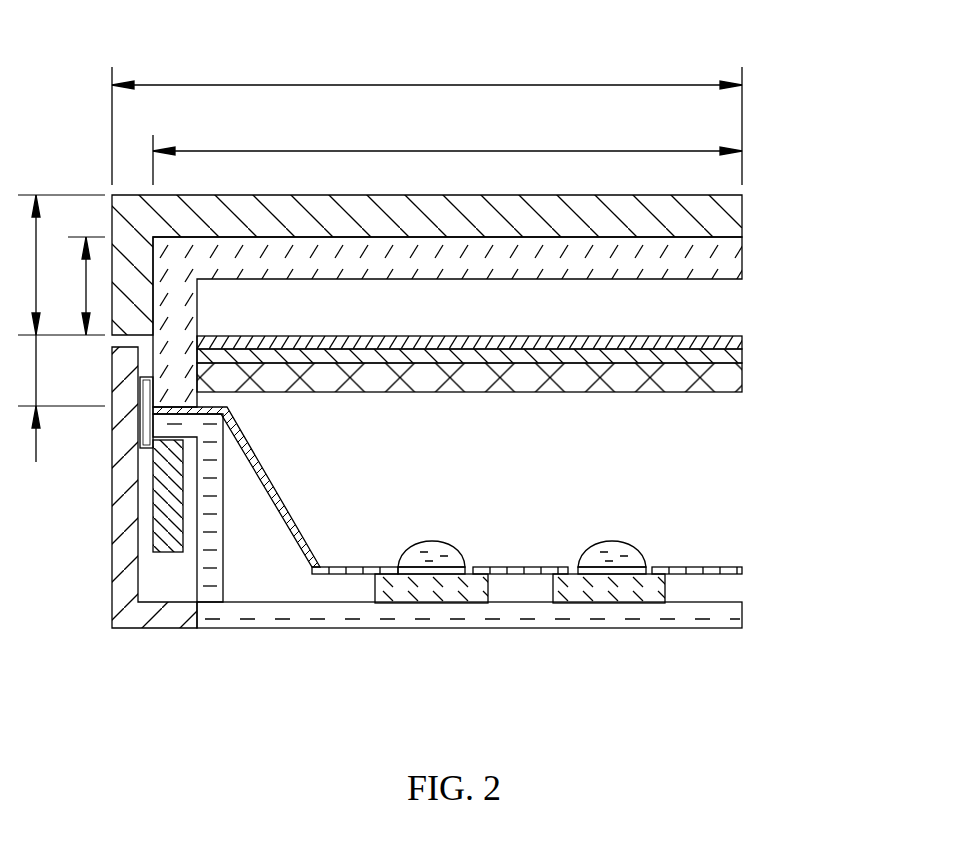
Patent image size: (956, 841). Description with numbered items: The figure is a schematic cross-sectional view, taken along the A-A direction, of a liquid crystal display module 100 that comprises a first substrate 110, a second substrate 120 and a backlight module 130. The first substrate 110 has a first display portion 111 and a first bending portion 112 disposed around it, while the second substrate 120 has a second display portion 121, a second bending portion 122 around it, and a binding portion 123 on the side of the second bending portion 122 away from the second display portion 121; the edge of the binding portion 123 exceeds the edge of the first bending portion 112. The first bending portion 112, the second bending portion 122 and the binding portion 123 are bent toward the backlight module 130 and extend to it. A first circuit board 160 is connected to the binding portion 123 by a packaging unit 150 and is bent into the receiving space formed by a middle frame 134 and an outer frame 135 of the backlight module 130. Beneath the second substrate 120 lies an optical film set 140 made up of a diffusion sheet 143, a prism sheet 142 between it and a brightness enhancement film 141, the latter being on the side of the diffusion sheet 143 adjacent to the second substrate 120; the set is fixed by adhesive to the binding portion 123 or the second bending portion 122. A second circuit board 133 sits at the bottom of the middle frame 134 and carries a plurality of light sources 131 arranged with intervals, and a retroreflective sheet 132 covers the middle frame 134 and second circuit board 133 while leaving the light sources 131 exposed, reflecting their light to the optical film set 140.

The liquid crystal display module 100 is at (376, 27).
The first substrate 110 is at (748, 208).
The first display portion 111 is at (427, 121).
The first bending portion 112 is at (52, 265).
The second substrate 120 is at (748, 270).
The second display portion 121 is at (447, 154).
The second bending portion 122 is at (79, 286).
The binding portion 123 is at (52, 398).
The backlight module 130 is at (510, 540).
The light sources 131 is at (612, 542).
The retroreflective sheet 132 is at (503, 568).
The second circuit board 133 is at (658, 600).
The middle frame 134 is at (735, 613).
The outer frame 135 is at (128, 585).
The optical film set 140 is at (529, 373).
The brightness enhancement film 141 is at (596, 338).
The prism sheet 142 is at (508, 353).
The diffusion sheet 143 is at (620, 381).
The packaging unit 150 is at (147, 424).
The first circuit board 160 is at (155, 490).